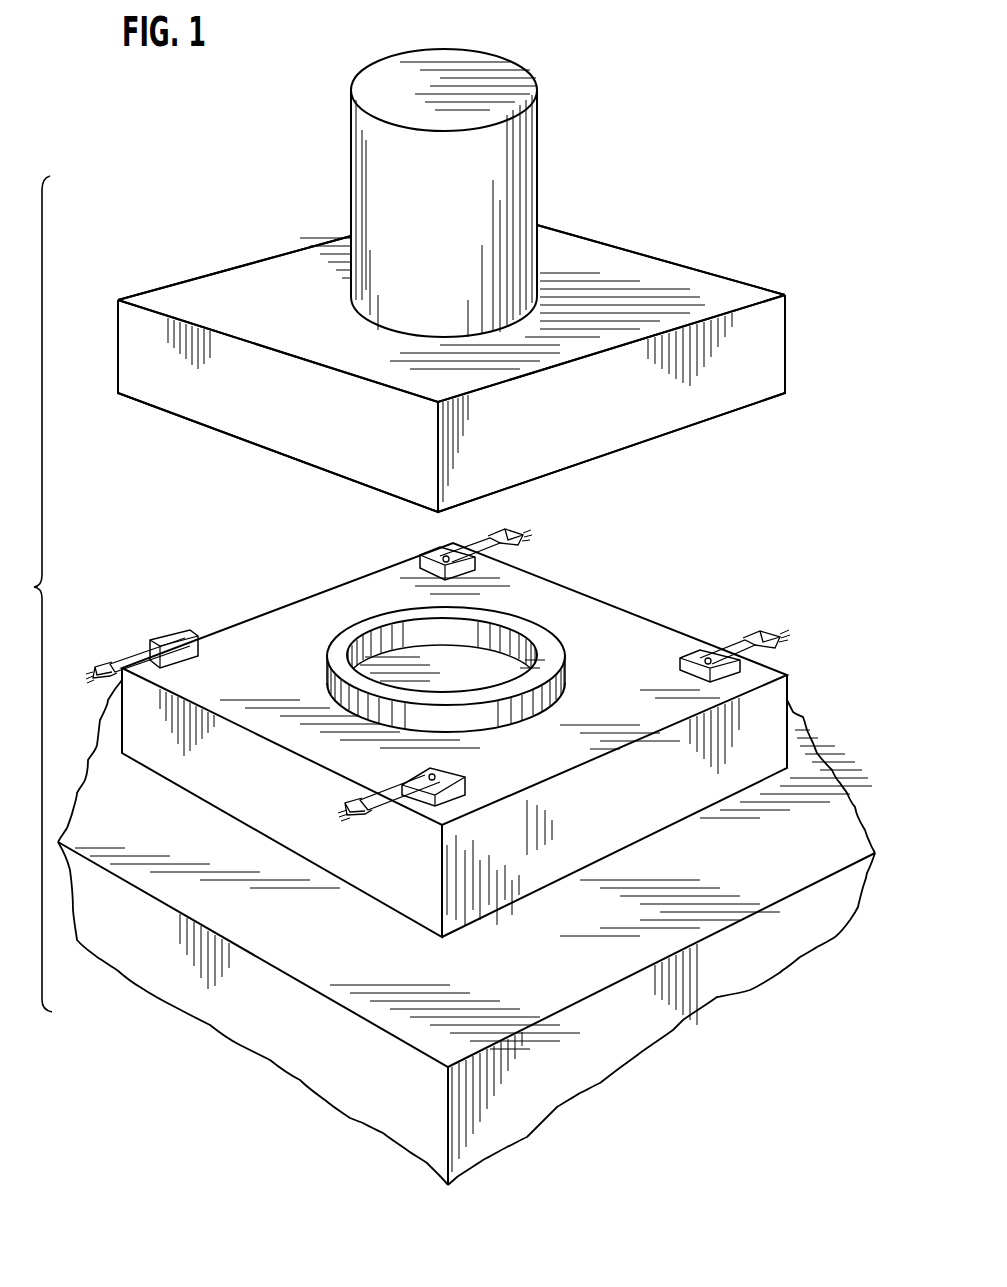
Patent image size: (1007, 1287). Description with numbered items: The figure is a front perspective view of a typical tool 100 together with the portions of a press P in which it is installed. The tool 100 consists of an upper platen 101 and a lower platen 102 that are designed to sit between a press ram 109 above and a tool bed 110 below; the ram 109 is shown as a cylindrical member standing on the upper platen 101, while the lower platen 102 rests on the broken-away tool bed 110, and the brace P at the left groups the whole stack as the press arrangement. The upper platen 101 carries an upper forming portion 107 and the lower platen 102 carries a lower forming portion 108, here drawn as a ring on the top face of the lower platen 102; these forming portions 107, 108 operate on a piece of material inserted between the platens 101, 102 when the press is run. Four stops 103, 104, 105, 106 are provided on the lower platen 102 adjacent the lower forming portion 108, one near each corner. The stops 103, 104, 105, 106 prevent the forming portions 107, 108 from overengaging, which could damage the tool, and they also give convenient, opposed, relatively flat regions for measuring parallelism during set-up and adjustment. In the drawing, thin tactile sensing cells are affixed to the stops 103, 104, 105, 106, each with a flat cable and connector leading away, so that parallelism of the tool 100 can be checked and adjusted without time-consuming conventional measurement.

The tool 100 is at (765, 270).
The upper platen 101 is at (210, 276).
The lower platen 102 is at (122, 733).
The stop 103 is at (200, 648).
The stop 104 is at (438, 808).
The stop 105 is at (688, 652).
The stop 106 is at (418, 563).
The upper forming portion 107 is at (235, 437).
The lower forming portion 108 is at (400, 612).
The press ram 109 is at (352, 182).
The tool bed 110 is at (715, 992).
The press P is at (30, 594).